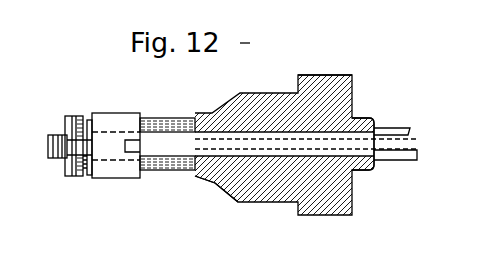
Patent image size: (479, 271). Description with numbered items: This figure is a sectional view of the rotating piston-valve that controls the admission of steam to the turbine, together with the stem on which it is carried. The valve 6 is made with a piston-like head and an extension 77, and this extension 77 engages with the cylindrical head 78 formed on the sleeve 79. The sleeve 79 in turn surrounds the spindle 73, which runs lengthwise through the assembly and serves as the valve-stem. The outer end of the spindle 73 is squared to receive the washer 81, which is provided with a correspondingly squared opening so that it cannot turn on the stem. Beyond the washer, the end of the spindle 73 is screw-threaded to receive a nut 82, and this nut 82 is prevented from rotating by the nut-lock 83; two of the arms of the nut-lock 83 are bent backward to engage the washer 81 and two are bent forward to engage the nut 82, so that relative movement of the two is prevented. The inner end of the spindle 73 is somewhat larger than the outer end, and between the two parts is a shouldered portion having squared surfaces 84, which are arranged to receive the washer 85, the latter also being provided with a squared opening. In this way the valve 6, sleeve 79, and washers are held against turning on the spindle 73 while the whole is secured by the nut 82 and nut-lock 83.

The valve 6 is at (333, 75).
The spindle 73 is at (266, 165).
The extension 77 is at (165, 172).
The cylindrical head 78 is at (112, 173).
The sleeve 79 is at (216, 181).
The washer 81 is at (86, 174).
The nut 82 is at (63, 152).
The nut-lock 83 is at (80, 108).
The squared surfaces 84 is at (388, 162).
The washer 85 is at (380, 110).